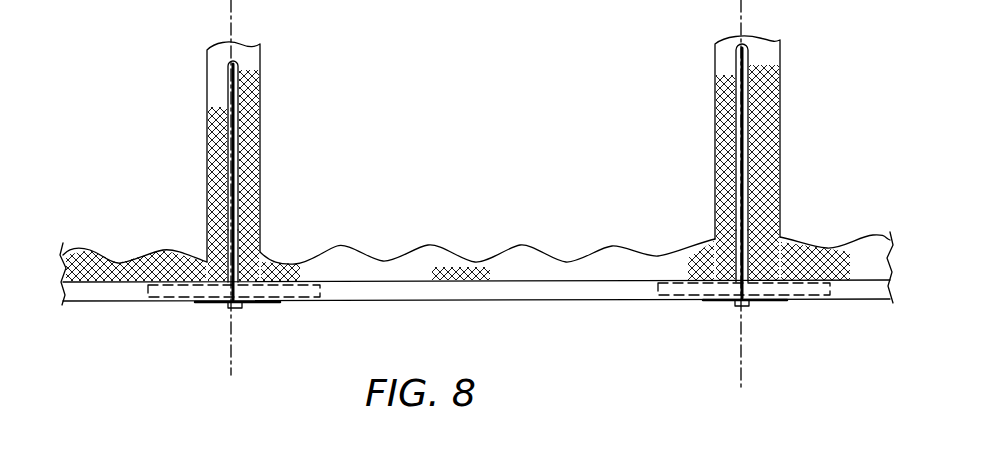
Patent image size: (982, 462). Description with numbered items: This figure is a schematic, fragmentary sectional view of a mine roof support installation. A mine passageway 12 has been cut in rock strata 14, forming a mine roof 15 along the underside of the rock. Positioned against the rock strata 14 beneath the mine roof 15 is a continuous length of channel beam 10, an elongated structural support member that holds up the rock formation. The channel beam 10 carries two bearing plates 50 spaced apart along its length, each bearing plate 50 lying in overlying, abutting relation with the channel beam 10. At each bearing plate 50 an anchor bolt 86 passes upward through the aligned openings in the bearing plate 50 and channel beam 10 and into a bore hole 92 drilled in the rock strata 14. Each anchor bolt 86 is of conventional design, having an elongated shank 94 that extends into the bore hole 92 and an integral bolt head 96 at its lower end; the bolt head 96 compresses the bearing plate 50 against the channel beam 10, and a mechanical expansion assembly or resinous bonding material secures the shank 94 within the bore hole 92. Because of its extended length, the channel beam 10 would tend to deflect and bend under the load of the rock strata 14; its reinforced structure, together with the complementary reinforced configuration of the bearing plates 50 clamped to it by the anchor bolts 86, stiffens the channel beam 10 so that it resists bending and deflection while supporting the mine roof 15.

The channel beam 10 is at (552, 301).
The mine passageway 12 is at (398, 339).
The rock strata 14 is at (250, 128).
The mine roof 15 is at (490, 284).
The bearing plate 50 is at (258, 304).
The anchor bolt 86 is at (238, 232).
The bore hole 92 is at (232, 216).
The elongated shank 94 is at (228, 80).
The bolt head 96 is at (228, 308).